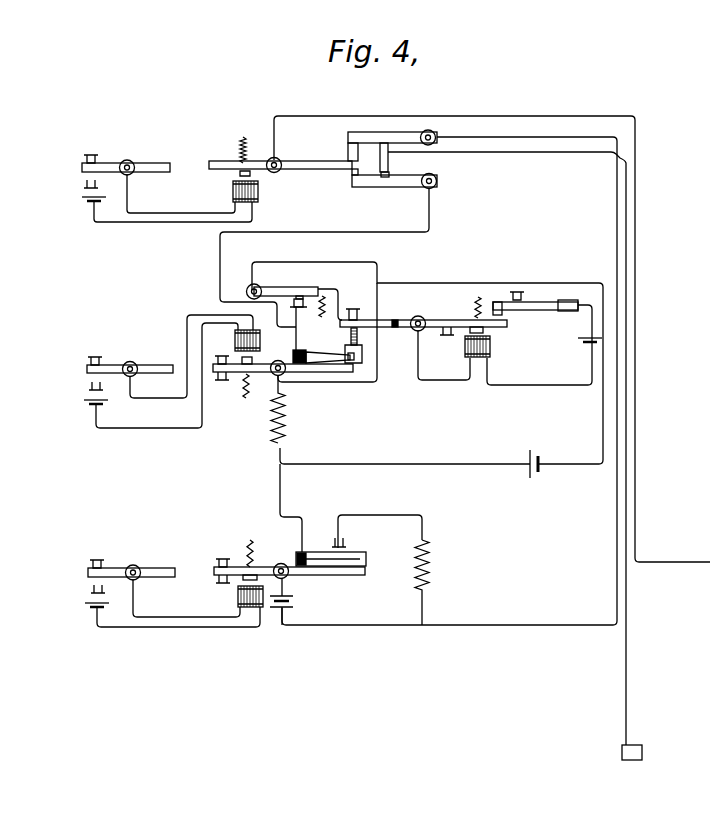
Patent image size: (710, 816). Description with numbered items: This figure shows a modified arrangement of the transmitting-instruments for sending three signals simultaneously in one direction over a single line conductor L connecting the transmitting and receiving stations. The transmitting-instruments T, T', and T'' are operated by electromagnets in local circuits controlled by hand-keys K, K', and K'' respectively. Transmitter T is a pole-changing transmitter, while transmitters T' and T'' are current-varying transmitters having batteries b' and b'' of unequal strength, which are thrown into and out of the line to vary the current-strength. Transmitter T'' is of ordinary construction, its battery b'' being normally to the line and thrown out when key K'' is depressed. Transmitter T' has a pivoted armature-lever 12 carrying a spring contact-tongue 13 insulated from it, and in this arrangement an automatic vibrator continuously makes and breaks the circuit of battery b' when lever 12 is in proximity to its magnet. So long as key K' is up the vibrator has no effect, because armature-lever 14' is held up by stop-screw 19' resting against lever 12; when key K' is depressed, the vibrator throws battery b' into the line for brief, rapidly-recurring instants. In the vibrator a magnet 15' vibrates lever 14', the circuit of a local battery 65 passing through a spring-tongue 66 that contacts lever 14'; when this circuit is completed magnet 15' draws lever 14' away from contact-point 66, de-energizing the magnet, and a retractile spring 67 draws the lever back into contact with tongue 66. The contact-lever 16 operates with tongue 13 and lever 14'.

The hand-key K is at (126, 165).
The hand-key K' is at (172, 367).
The hand-key K'' is at (174, 571).
The pole-changing transmitter T is at (323, 166).
The current-varying transmitter T' is at (320, 331).
The current-varying transmitter T'' is at (290, 555).
The line conductor L is at (492, 339).
The armature-lever 12 is at (319, 374).
The spring contact-tongue 13 is at (343, 361).
The armature-lever 14' is at (423, 314).
The magnet 15' is at (493, 347).
The contact-lever 16 is at (295, 293).
The stop-screw 19' is at (358, 306).
The local battery 65 is at (576, 346).
The spring-tongue 66 is at (535, 299).
The retractile spring 67 is at (467, 307).
The battery b' is at (541, 458).
The battery b'' is at (294, 601).